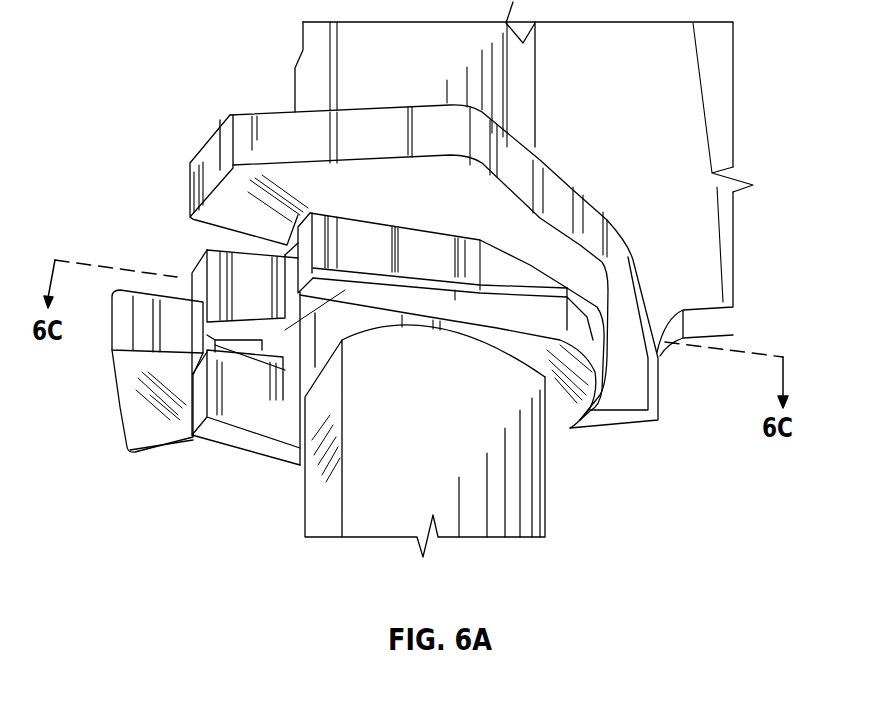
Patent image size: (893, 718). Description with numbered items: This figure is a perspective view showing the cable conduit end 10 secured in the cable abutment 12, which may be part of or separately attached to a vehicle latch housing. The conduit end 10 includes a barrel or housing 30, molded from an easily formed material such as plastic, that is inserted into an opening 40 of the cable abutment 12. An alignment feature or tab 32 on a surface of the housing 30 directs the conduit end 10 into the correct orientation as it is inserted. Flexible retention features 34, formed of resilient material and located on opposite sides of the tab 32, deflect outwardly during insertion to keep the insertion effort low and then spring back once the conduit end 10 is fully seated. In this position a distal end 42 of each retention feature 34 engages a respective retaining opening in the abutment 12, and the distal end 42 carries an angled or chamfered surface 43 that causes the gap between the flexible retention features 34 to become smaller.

The cable conduit end 10 is at (527, 562).
The cable abutment 12 is at (485, 207).
The housing 30 is at (398, 465).
The alignment feature or tab 32 is at (283, 355).
The flexible retention features 34 is at (405, 288).
The opening 40 is at (186, 263).
The distal end 42 is at (243, 365).
The angled or chamfered surface 43 is at (222, 317).